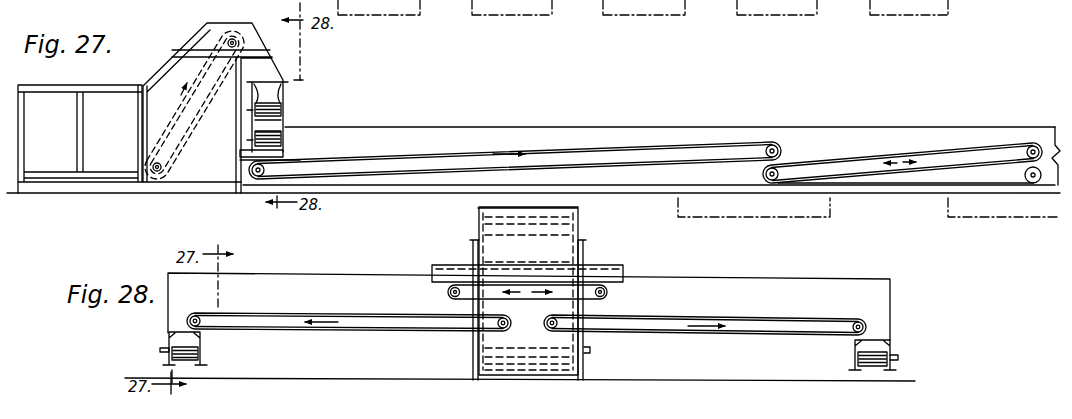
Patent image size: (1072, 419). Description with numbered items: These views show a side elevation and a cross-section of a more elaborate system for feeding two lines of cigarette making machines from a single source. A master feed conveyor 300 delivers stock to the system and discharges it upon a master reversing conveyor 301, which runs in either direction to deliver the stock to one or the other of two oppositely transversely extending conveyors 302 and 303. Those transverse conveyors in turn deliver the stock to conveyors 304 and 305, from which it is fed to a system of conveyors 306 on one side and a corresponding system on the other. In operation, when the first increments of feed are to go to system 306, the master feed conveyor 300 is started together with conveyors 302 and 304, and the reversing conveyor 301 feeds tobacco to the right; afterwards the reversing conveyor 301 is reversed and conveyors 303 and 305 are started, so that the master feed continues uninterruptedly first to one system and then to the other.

In FIG. 27, the master feed conveyor 300 is at (194, 46).
In FIG. 28, the master feed conveyor 300 is at (580, 231).
In FIG. 27, the master reversing conveyor 301 is at (283, 107).
In FIG. 28, the master reversing conveyor 301 is at (608, 294).
In FIG. 27, the transversely extending conveyor 302 is at (285, 141).
In FIG. 28, the transversely extending conveyor 302 is at (375, 313).
In FIG. 28, the transversely extending conveyor 303 is at (788, 317).
In FIG. 27, the conveyor 304 is at (552, 146).
In FIG. 28, the conveyor 304 is at (165, 351).
In FIG. 28, the conveyor 305 is at (886, 346).
In FIG. 27, the system of conveyors 306 is at (1030, 142).